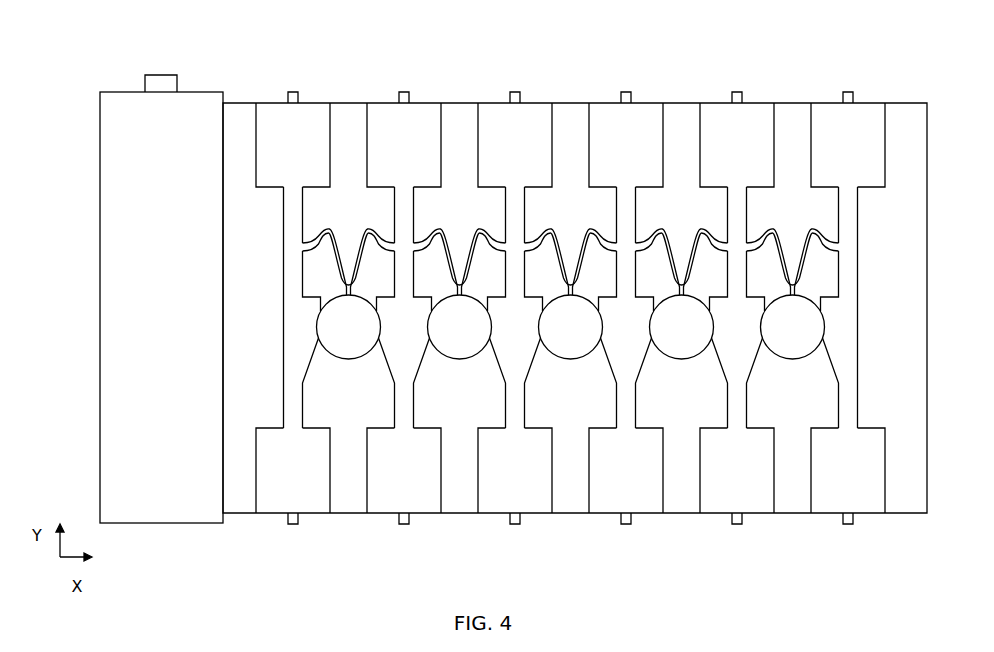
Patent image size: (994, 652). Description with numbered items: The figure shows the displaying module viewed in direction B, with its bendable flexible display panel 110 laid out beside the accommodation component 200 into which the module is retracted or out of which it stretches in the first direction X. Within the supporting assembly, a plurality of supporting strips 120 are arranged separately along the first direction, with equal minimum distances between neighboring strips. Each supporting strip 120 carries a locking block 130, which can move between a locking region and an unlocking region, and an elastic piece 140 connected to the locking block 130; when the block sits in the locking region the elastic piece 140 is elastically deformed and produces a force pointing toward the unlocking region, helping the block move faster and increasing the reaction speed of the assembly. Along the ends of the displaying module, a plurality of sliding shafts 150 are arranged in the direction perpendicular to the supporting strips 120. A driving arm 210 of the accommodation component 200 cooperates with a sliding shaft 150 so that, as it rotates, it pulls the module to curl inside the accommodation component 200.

The flexible display panel 110 is at (917, 113).
The supporting strip 120 is at (275, 498).
The locking block 130 is at (352, 353).
The elastic piece 140 is at (351, 267).
The sliding shaft 150 is at (290, 92).
The accommodation component 200 is at (122, 105).
The driving arm 210 is at (163, 77).